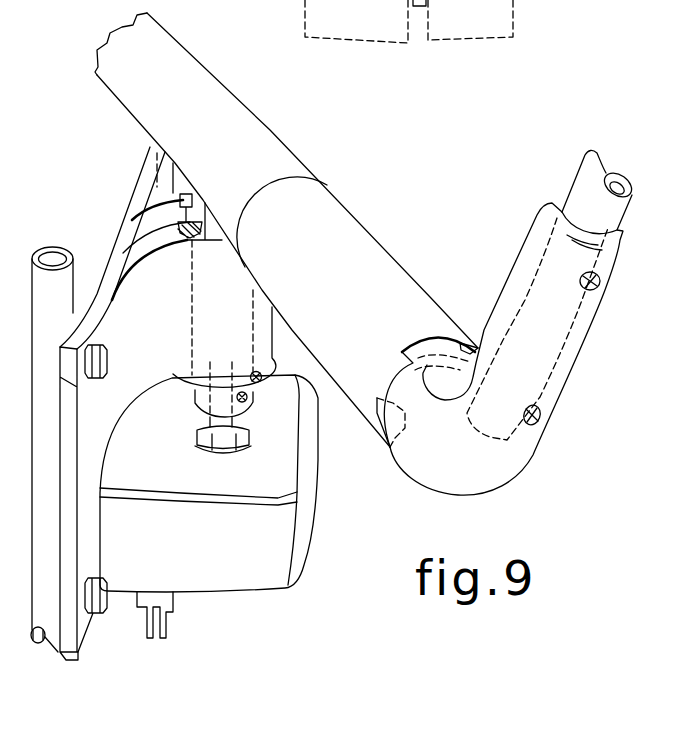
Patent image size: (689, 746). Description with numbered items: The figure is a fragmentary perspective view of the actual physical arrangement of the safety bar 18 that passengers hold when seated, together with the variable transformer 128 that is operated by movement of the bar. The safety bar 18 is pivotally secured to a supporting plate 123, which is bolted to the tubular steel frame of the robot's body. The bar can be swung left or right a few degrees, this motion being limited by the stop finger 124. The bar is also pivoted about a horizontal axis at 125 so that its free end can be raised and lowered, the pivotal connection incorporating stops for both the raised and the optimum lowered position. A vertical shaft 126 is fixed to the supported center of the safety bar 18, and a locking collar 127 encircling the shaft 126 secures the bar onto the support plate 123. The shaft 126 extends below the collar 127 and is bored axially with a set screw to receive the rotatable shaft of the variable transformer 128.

The safety bar 18 is at (224, 150).
The supporting plate 123 is at (115, 240).
The stop finger 124 is at (185, 200).
The horizontal axis pivot 125 is at (468, 325).
The vertical shaft 126 is at (190, 302).
The locking collar 127 is at (262, 376).
The variable transformer 128 is at (213, 547).